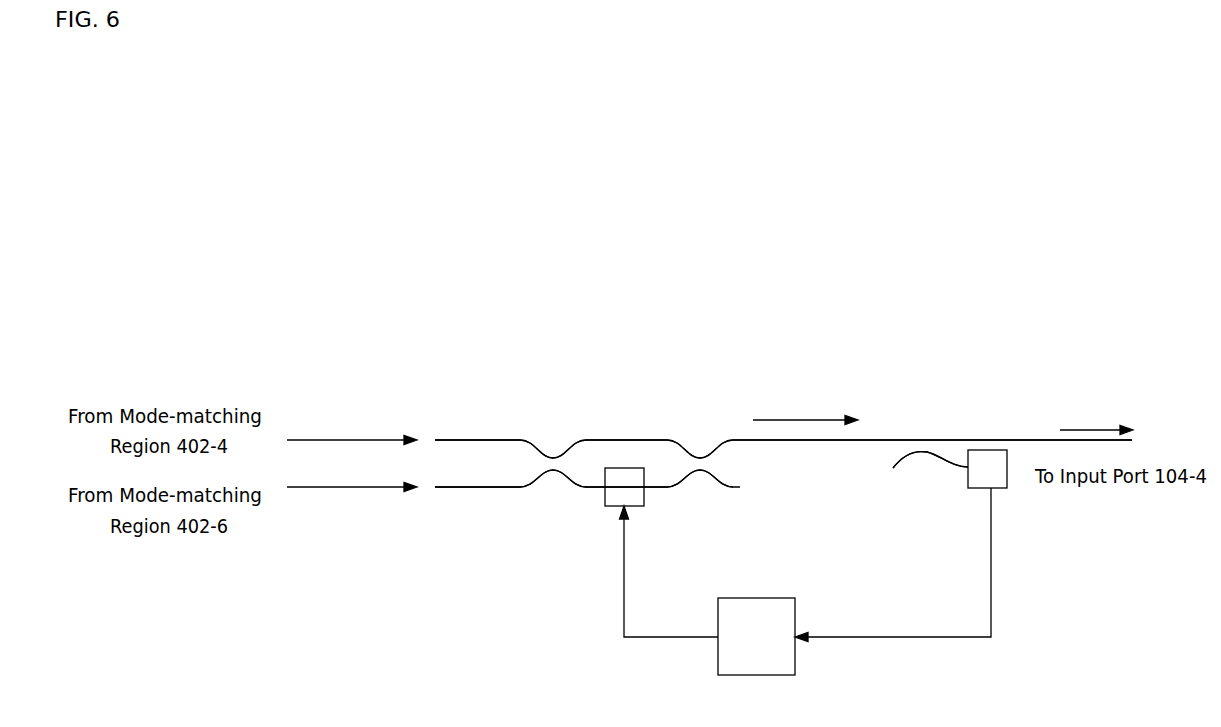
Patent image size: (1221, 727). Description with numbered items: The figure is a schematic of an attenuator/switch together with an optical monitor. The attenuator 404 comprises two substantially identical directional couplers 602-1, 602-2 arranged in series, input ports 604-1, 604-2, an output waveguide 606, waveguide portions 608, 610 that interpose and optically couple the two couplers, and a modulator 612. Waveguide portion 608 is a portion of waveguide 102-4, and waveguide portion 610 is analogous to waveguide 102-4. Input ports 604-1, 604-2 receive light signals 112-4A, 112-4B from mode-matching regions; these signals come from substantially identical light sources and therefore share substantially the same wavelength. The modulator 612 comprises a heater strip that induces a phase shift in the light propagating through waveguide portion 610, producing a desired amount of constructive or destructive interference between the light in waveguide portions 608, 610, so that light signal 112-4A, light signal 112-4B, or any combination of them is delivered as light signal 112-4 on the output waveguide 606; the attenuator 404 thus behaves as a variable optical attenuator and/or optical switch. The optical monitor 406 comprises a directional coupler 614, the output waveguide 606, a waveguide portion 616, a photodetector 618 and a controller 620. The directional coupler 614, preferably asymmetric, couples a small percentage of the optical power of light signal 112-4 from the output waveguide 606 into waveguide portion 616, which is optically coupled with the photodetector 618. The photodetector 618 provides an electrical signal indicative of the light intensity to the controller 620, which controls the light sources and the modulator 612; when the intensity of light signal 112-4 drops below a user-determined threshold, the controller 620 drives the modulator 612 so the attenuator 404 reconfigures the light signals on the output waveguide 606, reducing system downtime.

The attenuator 404 is at (492, 309).
The optical monitor 406 is at (904, 276).
The light signal 112-4A is at (378, 440).
The light signal 112-4B is at (378, 487).
The light signal 112-4 is at (832, 420).
The waveguide 102-4 is at (1027, 440).
The input port 604-1 is at (455, 440).
The input port 604-2 is at (455, 490).
The directional coupler 602-1 is at (548, 425).
The directional coupler 602-2 is at (709, 500).
The waveguide portion 608 is at (655, 440).
The waveguide portion 610 is at (657, 488).
The modulator 612 is at (620, 506).
The output waveguide 606 is at (908, 438).
The directional coupler 614 is at (902, 486).
The waveguide portion 616 is at (953, 467).
The photodetector 618 is at (1000, 477).
The controller 620 is at (739, 649).